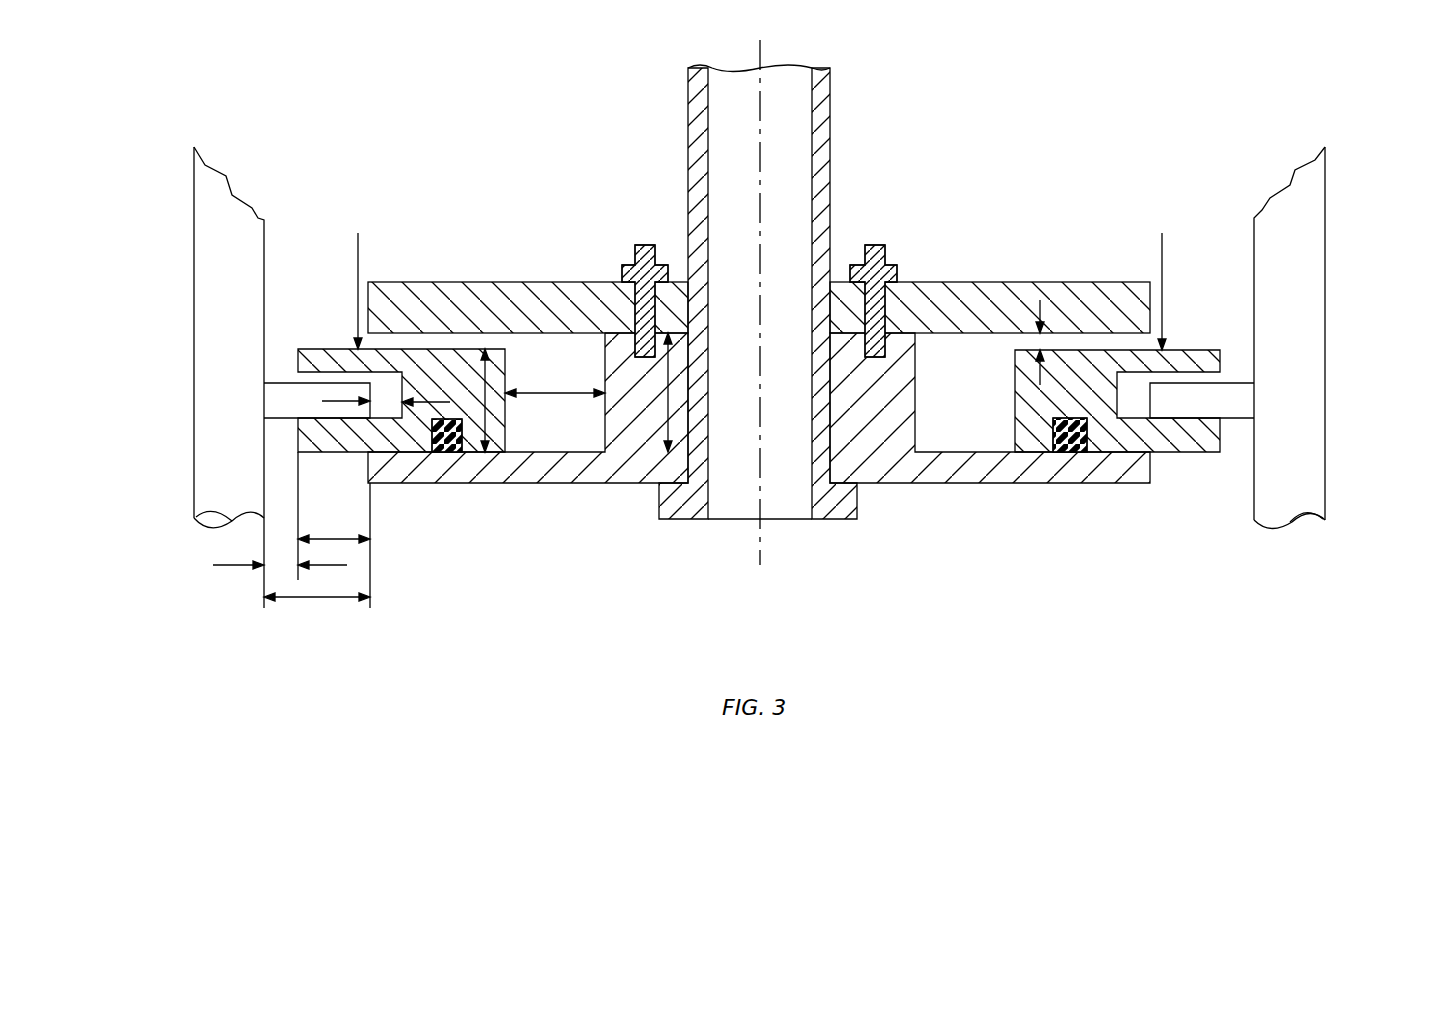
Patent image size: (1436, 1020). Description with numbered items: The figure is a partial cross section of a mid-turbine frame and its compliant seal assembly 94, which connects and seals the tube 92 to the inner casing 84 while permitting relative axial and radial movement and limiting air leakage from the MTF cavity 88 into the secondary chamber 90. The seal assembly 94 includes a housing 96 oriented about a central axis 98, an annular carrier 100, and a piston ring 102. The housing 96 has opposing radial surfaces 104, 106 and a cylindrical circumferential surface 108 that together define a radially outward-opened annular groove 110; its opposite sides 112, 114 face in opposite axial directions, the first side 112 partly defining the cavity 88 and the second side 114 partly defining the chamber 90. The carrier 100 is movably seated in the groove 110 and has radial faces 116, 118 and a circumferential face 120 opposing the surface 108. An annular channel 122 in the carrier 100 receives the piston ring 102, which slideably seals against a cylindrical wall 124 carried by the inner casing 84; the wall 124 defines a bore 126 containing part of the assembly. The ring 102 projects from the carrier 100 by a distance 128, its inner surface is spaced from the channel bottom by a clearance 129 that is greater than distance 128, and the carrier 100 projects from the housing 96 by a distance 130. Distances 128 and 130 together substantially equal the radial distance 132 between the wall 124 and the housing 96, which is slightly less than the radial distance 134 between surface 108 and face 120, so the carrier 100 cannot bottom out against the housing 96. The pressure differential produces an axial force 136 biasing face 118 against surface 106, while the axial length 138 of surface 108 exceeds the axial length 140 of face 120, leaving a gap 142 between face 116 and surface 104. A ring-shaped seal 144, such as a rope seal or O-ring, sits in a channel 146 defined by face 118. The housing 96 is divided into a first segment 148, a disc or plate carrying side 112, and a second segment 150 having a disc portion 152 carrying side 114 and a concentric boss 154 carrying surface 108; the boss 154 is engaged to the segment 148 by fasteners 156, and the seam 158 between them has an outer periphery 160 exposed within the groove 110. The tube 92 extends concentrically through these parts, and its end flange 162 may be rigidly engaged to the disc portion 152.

The inner casing 84 is at (1300, 350).
The MTF cavity 88 is at (1045, 198).
The secondary chamber 90 is at (985, 563).
The tube 92 is at (688, 140).
The compliant seal assembly 94 is at (913, 108).
The housing 96 is at (962, 285).
The central axis 98 is at (748, 547).
The annular carrier 100 is at (455, 348).
The piston ring 102 is at (283, 380).
The radial surface 104 is at (1098, 350).
The radial surface 106 is at (1133, 445).
The circumferential surface 108 is at (917, 350).
The annular groove 110 is at (972, 443).
The first side 112 is at (573, 282).
The second side 114 is at (555, 483).
The radial face 116 is at (1185, 350).
The radial face 118 is at (1183, 452).
The circumferential face 120 is at (1007, 435).
The annular channel 122 is at (1130, 401).
The cylindrical wall 124 is at (268, 256).
The bore 126 is at (322, 329).
The distance 128 is at (227, 567).
The radial clearance 129 is at (346, 412).
The distance 130 is at (334, 530).
The radial distance 132 is at (317, 576).
The radial distance 134 is at (555, 407).
The axial force 136 is at (358, 258).
The axial length 138 is at (668, 413).
The axial length 140 is at (451, 400).
The gap 142 is at (1036, 356).
The ring-shaped seal 144 is at (1083, 452).
The channel 146 is at (438, 452).
The first segment 148 is at (430, 300).
The second segment 150 is at (490, 483).
The disc portion 152 is at (522, 467).
The boss 154 is at (895, 370).
The fasteners 156 is at (872, 247).
The seam 158 is at (882, 358).
The outer periphery 160 is at (605, 340).
The end flange 162 is at (830, 519).